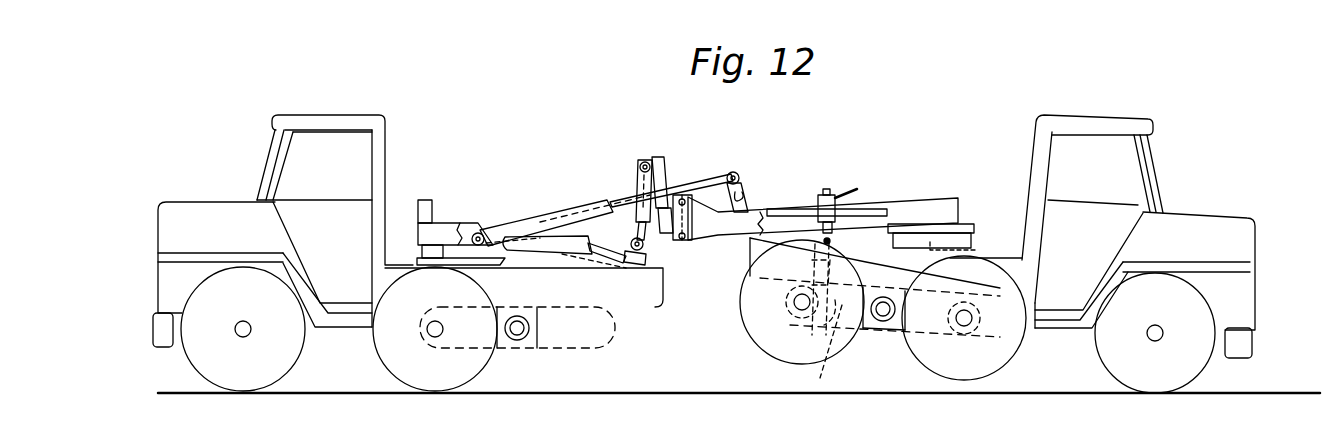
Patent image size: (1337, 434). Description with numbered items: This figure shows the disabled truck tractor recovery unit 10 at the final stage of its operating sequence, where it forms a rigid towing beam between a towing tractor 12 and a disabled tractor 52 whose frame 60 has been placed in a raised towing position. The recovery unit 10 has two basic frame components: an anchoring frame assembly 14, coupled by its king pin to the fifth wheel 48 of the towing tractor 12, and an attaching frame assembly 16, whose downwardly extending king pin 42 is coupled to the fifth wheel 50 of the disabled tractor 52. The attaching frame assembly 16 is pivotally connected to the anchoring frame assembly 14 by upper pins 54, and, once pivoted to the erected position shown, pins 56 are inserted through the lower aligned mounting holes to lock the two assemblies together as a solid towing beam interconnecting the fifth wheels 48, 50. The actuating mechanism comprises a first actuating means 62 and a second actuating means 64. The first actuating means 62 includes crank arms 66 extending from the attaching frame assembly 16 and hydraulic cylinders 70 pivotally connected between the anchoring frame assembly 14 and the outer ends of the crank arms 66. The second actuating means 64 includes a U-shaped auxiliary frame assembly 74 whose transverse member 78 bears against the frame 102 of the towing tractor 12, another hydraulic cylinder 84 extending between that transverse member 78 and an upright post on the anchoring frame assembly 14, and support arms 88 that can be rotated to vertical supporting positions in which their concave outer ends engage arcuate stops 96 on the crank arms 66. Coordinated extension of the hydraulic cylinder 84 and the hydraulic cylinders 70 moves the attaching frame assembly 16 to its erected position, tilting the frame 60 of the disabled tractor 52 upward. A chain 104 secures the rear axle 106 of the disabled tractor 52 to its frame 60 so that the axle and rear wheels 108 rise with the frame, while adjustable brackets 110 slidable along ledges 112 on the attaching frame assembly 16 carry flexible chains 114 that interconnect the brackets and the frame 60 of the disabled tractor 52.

The disabled truck tractor recovery unit 10 is at (796, 136).
The towing tractor 12 is at (388, 130).
The anchoring frame assembly 14 is at (455, 213).
The attaching frame assembly 16 is at (928, 195).
The king pin 42 is at (972, 242).
The fifth wheel 48 is at (462, 274).
The fifth wheel 50 is at (972, 224).
The disabled tractor 52 is at (1036, 125).
The pins 54 is at (670, 195).
The pins 56 is at (693, 236).
The frame 60 is at (748, 260).
The first actuating means 62 is at (723, 164).
The second actuating means 64 is at (566, 259).
The crank arms 66 is at (740, 170).
The hydraulic cylinders 70 is at (598, 200).
The auxiliary frame assembly 74 is at (619, 264).
The transverse member 78 is at (648, 258).
The hydraulic cylinder 84 is at (641, 180).
The support arms 88 is at (588, 238).
The arcuate stops 96 is at (746, 195).
The frame 102 is at (664, 290).
The chain 104 is at (800, 322).
The rear axle 106 is at (822, 368).
The rear wheels 108 is at (856, 332).
The adjustable brackets 110 is at (833, 194).
The ledges 112 is at (872, 208).
The flexible chains 114 is at (836, 264).